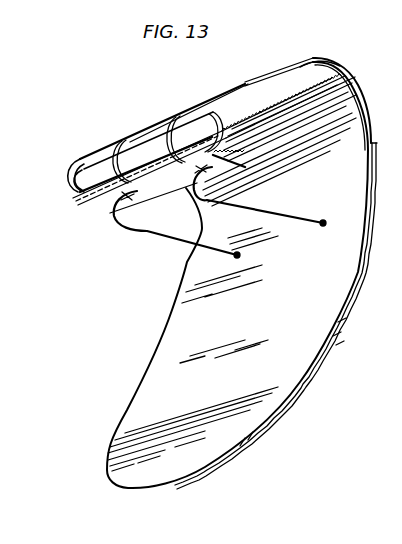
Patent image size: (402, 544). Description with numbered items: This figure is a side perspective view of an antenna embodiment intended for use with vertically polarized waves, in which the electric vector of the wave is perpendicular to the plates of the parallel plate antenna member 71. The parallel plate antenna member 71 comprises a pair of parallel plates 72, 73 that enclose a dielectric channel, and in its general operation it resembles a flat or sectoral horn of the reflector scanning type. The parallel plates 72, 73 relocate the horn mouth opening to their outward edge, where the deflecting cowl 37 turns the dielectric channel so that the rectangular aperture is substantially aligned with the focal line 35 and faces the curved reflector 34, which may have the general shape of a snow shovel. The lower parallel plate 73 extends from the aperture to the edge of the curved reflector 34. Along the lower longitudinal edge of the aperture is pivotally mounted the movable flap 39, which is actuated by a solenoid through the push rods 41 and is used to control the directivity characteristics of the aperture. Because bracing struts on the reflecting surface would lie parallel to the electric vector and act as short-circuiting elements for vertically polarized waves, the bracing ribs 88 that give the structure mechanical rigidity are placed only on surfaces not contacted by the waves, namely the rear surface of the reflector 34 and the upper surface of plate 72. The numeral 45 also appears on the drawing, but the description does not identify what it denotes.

The curved reflector 34 is at (347, 280).
The focal line 35 is at (216, 152).
The deflecting cowl 37 is at (75, 183).
The movable flap 39 is at (107, 207).
The push rods 41 is at (188, 246).
The lower end of visor 45 is at (193, 450).
The parallel plate antenna member 71 is at (160, 123).
The parallel plate 72 is at (317, 66).
The lower parallel plate 73 is at (300, 88).
The bracing ribs 88 is at (265, 78).